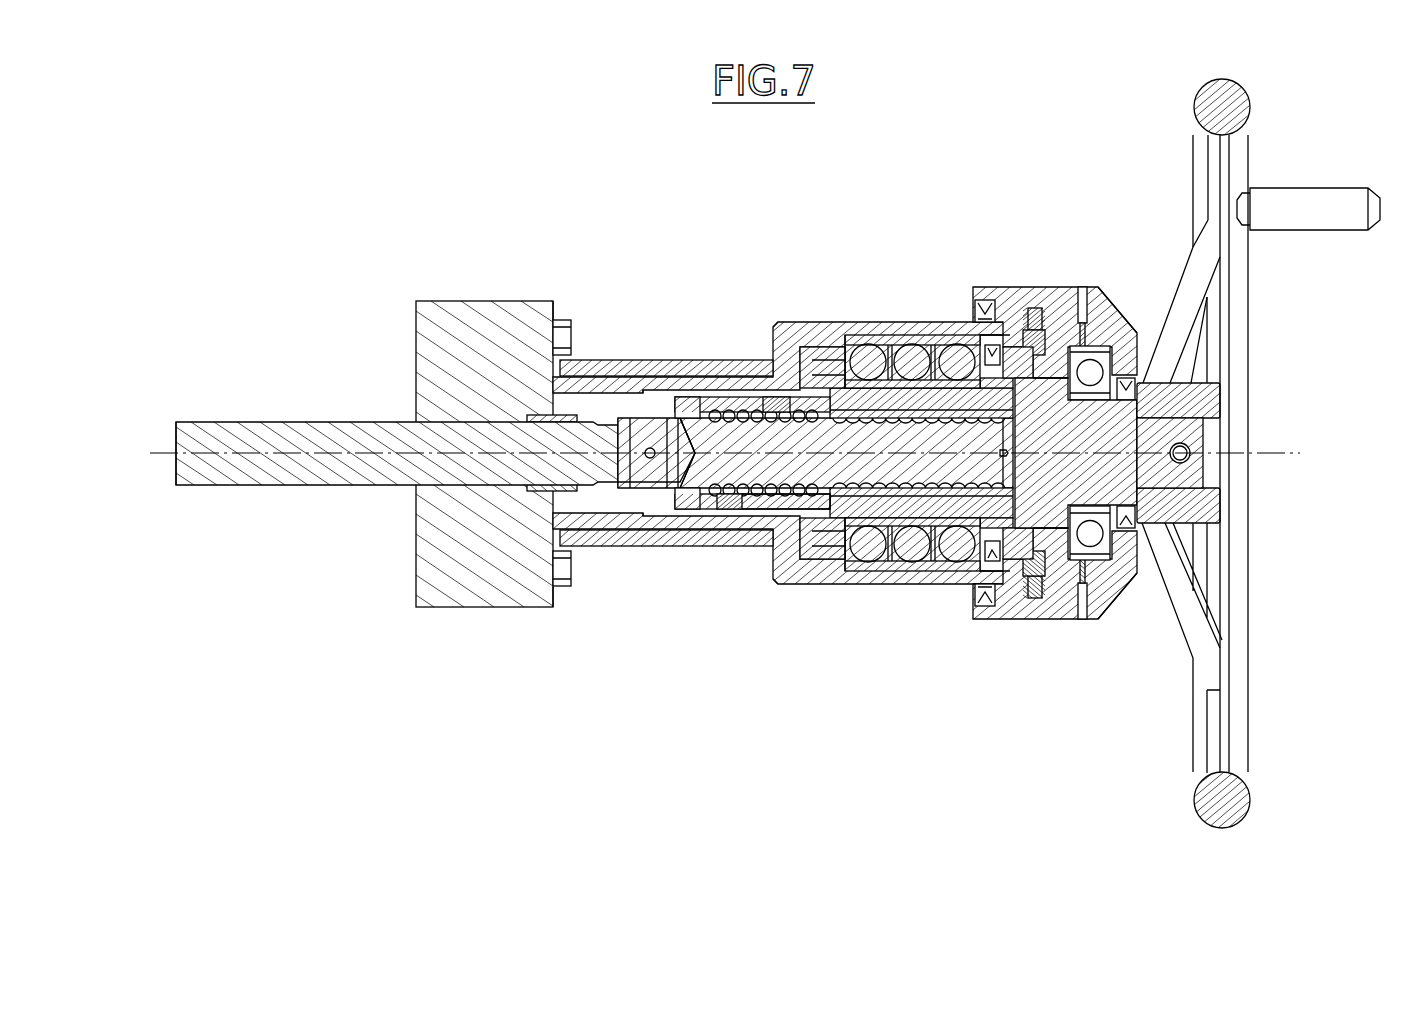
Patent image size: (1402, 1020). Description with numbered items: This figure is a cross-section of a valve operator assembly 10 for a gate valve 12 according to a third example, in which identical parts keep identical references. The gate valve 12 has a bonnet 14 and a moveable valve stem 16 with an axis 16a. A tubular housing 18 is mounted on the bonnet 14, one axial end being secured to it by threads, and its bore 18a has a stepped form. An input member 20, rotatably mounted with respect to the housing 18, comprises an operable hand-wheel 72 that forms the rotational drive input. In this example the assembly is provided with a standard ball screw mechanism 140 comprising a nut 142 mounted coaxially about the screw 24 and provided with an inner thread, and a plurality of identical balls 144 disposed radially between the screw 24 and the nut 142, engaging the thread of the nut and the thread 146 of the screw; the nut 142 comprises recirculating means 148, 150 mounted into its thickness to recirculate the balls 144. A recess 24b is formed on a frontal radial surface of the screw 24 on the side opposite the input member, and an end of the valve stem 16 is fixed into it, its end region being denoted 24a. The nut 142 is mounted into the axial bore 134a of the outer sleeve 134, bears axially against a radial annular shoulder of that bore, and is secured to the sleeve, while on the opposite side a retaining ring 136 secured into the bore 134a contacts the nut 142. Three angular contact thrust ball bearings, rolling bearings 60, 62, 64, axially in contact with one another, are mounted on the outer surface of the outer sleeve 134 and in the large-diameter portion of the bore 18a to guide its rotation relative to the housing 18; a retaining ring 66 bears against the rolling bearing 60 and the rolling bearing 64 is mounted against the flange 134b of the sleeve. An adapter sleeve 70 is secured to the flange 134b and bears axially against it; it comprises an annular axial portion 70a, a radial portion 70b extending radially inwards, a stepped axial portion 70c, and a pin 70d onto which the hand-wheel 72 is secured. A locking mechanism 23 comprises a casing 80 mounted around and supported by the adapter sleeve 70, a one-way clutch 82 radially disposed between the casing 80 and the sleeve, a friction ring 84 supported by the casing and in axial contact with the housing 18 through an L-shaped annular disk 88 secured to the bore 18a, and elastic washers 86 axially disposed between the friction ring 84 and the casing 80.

The valve operator assembly 10 is at (773, 297).
The gate valve 12 is at (497, 292).
The bonnet 14 is at (457, 300).
The valve stem 16 is at (235, 424).
The axis 16a is at (157, 446).
The tubular housing 18 is at (937, 320).
The bore 18a is at (664, 386).
The input member 20 is at (1297, 160).
The locking mechanism 23 is at (1113, 273).
The screw 24 is at (758, 490).
The coupling sleeve first end 24a is at (160, 440).
The recess 24b is at (658, 473).
The rolling bearing 60 is at (874, 336).
The rolling bearing 62 is at (907, 336).
The rolling bearing 64 is at (958, 336).
The retaining ring 66 is at (825, 364).
The adapter sleeve 70 is at (1205, 468).
The annular axial portion 70a is at (1003, 368).
The radial portion 70b is at (1052, 546).
The stepped axial portion 70c is at (1100, 485).
The pin 70d is at (1170, 437).
The hand-wheel 72 is at (1245, 718).
The casing 80 is at (1125, 318).
The one-way clutch 82 is at (1075, 560).
The friction ring 84 is at (1043, 308).
The elastic washers 86 is at (1083, 290).
The annular disk 88 is at (995, 568).
The outer sleeve 134 is at (872, 512).
The axial bore 134a is at (915, 492).
The flange 134b is at (983, 492).
The retaining ring 136 is at (692, 514).
The ball screw mechanism 140 is at (745, 468).
The nut 142 is at (801, 505).
The balls 144 is at (742, 408).
The thread 146 is at (985, 420).
The recirculating means 148 is at (727, 508).
The recirculating means 150 is at (789, 396).